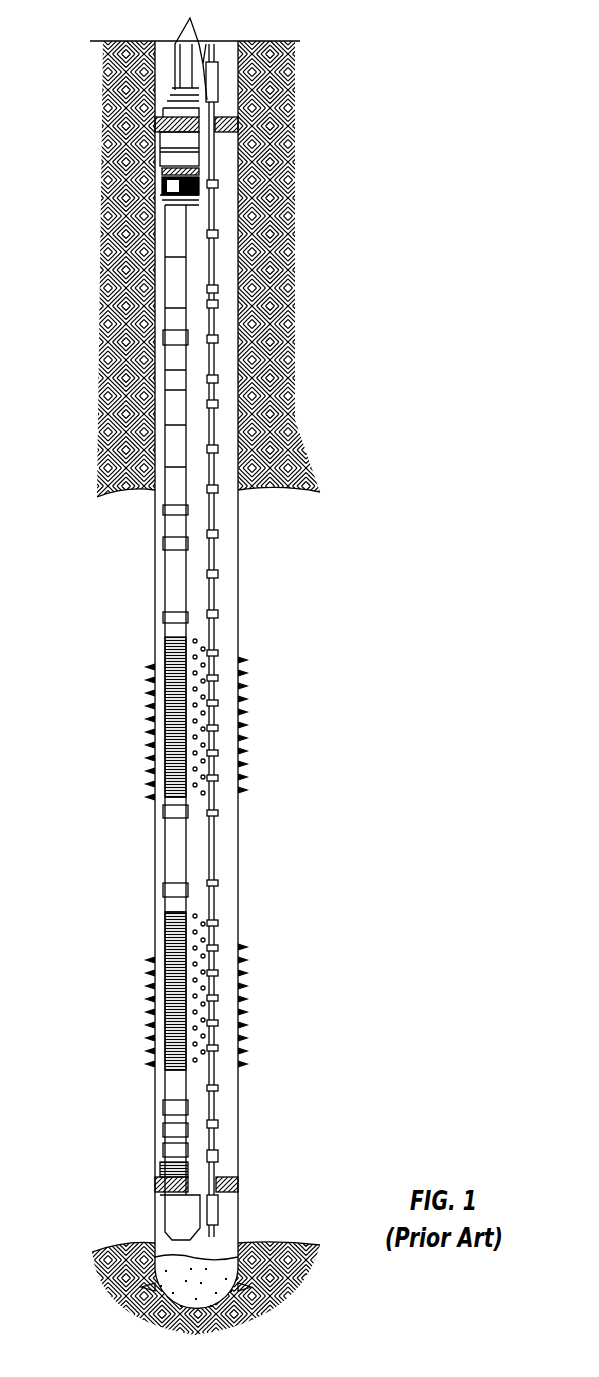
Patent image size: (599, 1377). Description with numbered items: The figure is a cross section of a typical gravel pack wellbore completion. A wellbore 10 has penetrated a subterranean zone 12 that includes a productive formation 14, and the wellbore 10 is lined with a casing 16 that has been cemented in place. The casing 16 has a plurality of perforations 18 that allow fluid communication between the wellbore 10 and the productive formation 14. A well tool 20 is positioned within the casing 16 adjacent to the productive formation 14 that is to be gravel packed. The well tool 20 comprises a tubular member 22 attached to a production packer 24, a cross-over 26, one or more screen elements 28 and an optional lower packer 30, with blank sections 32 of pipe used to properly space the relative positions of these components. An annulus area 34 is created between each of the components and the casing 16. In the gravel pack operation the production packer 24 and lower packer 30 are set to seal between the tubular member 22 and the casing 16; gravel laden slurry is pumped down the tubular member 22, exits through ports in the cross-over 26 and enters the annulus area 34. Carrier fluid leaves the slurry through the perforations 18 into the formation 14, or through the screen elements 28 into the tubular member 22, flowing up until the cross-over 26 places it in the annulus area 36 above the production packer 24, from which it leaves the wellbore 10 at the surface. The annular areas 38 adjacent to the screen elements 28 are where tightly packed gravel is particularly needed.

The wellbore 10 is at (163, 70).
The subterranean zone 12 is at (284, 470).
The productive formation 14 is at (284, 856).
The casing 16 is at (243, 280).
The perforations 18 is at (247, 705).
The well tool 20 is at (178, 380).
The tubular member 22 is at (212, 55).
The production packer 24 is at (178, 143).
The cross-over 26 is at (178, 280).
The screen elements 28 is at (196, 667).
The lower packer 30 is at (163, 1200).
The blank sections 32 is at (180, 850).
The annulus area 34 is at (226, 420).
The annulus area above the production packer 36 is at (228, 88).
The annular areas adjacent to the screen elements 38 is at (227, 765).